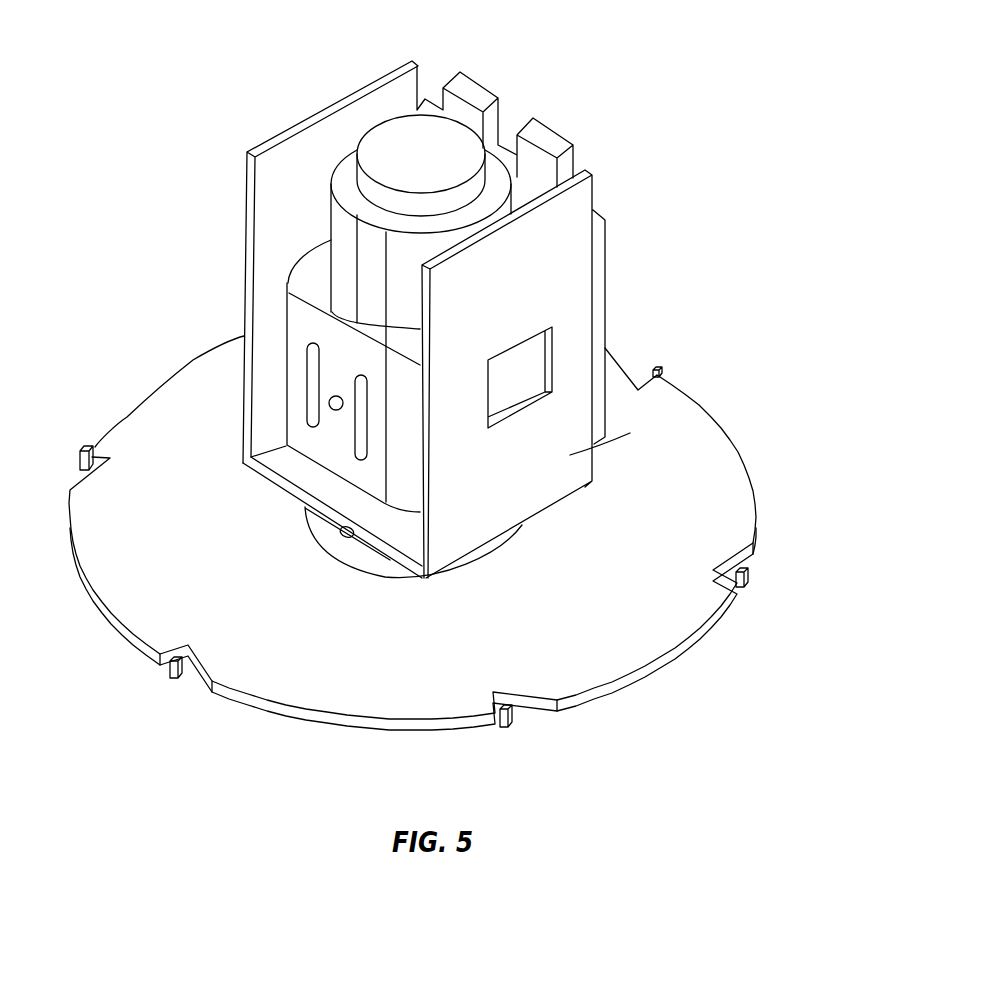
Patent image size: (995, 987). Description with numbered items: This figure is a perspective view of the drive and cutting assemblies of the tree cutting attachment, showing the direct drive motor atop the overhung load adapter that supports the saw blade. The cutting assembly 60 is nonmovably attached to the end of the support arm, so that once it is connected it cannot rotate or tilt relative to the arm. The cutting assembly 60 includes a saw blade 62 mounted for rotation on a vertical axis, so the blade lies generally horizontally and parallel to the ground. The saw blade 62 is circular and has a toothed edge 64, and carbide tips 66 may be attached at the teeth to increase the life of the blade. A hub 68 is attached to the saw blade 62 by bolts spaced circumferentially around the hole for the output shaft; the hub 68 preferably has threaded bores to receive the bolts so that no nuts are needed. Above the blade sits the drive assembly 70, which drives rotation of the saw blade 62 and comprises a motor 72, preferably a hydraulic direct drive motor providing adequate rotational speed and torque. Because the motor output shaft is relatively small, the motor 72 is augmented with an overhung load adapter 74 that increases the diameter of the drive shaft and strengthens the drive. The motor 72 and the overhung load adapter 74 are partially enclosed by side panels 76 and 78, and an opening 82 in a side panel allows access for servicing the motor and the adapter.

The cutting assembly 60 is at (745, 457).
The saw blade 62 is at (668, 628).
The toothed edge 64 is at (531, 705).
The carbide tips 66 is at (78, 460).
The hub 68 is at (357, 562).
The drive assembly 70 is at (611, 233).
The motor 72 is at (346, 290).
The overhung load adapter 74 is at (327, 381).
The side panel 76 is at (373, 98).
The side panel 78 is at (662, 373).
The opening 82 is at (532, 363).